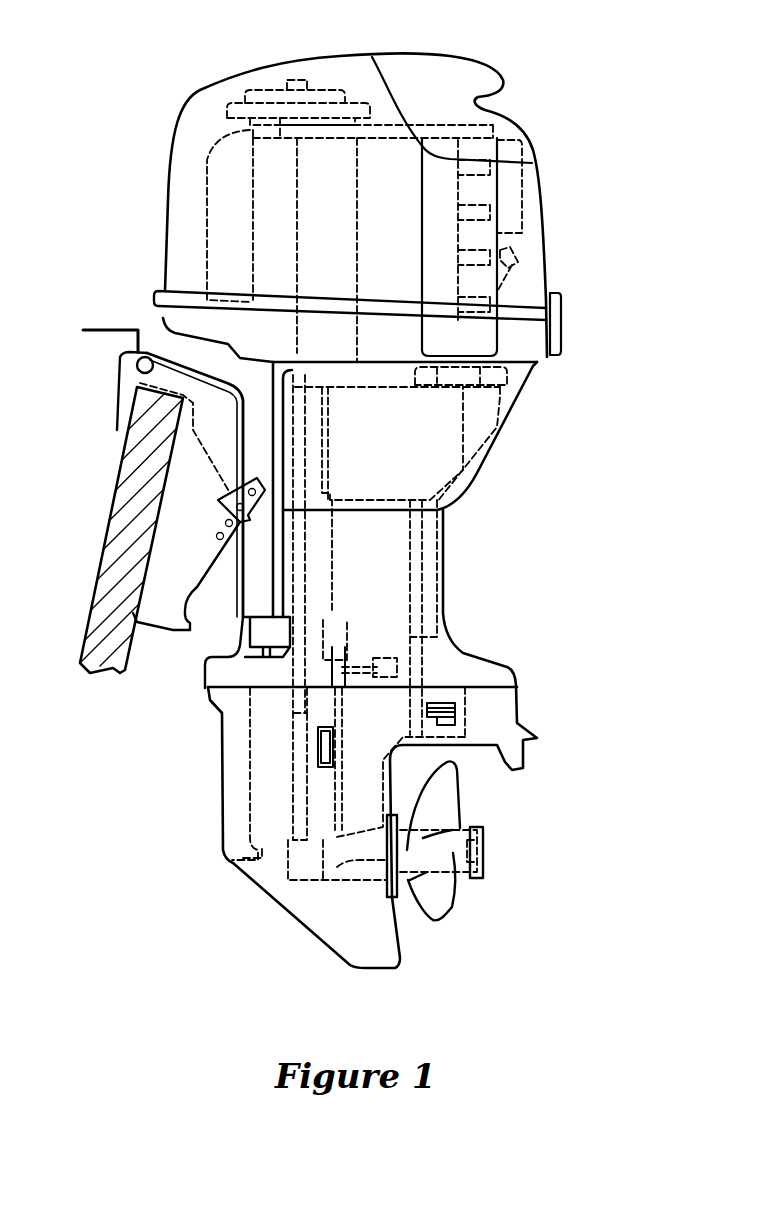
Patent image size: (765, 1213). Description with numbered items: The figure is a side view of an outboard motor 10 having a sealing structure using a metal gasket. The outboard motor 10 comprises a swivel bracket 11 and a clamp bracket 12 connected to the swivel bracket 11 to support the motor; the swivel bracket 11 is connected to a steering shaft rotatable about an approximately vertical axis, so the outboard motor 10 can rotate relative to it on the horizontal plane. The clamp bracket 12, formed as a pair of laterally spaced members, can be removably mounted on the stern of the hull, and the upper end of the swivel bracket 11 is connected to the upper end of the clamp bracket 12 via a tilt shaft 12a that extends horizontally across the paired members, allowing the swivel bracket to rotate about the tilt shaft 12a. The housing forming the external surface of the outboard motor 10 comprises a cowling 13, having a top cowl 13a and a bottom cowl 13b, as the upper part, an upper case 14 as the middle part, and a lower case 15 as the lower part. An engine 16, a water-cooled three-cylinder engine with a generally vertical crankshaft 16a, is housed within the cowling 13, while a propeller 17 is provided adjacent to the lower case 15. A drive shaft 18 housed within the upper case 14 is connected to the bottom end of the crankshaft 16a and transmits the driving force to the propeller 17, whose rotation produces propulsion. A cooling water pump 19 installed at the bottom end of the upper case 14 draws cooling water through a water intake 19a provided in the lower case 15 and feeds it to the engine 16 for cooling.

The outboard motor 10 is at (588, 65).
The swivel bracket 11 is at (253, 568).
The clamp bracket 12 is at (98, 600).
The tilt shaft 12a is at (137, 366).
The cowling 13 is at (628, 266).
The top cowl 13a is at (540, 276).
The bottom cowl 13b is at (533, 340).
The upper case 14 is at (447, 563).
The lower case 15 is at (233, 788).
The engine 16 is at (212, 153).
The crankshaft 16a is at (297, 78).
The propeller 17 is at (448, 808).
The drive shaft 18 is at (307, 595).
The cooling water pump 19 is at (278, 680).
The water intake 19a is at (337, 737).